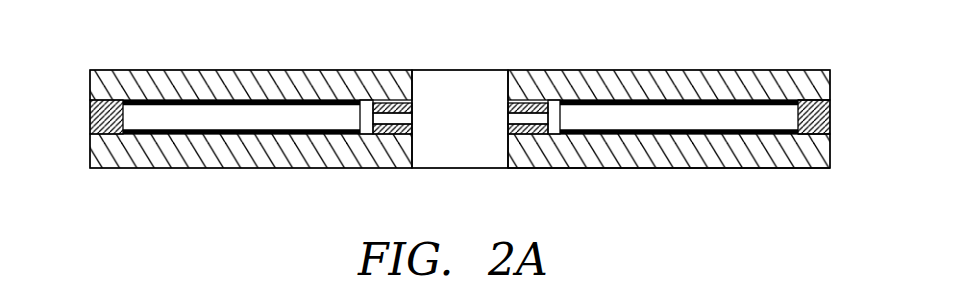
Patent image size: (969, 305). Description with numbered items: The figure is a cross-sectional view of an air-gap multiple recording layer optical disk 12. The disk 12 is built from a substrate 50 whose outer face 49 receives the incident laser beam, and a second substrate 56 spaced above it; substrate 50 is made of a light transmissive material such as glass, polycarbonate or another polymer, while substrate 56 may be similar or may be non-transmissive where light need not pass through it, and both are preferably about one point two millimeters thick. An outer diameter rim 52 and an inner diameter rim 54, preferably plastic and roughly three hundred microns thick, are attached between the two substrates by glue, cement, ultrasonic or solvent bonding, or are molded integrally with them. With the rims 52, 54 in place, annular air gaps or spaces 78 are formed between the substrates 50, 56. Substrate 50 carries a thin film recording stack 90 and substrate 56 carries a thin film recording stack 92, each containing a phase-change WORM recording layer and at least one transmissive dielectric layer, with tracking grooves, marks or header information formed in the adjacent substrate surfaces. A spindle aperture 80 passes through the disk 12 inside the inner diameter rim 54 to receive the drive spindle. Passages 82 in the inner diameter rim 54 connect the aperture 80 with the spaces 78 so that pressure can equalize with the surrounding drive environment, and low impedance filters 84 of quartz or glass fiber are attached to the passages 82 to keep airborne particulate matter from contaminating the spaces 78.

The disk 12 is at (182, 192).
The outer face 49 is at (754, 170).
The substrate 50 is at (90, 160).
The outer diameter (OD) rim 52 is at (90, 126).
The inner diameter (ID) rim 54 is at (414, 108).
The second substrate 56 is at (90, 92).
The annular air gaps 78 is at (213, 117).
The spindle aperture 80 is at (490, 170).
The passages 82 is at (508, 121).
The low impedance filters 84 is at (360, 118).
The thin film recording stack 90 is at (783, 137).
The thin film recording stack 92 is at (783, 100).